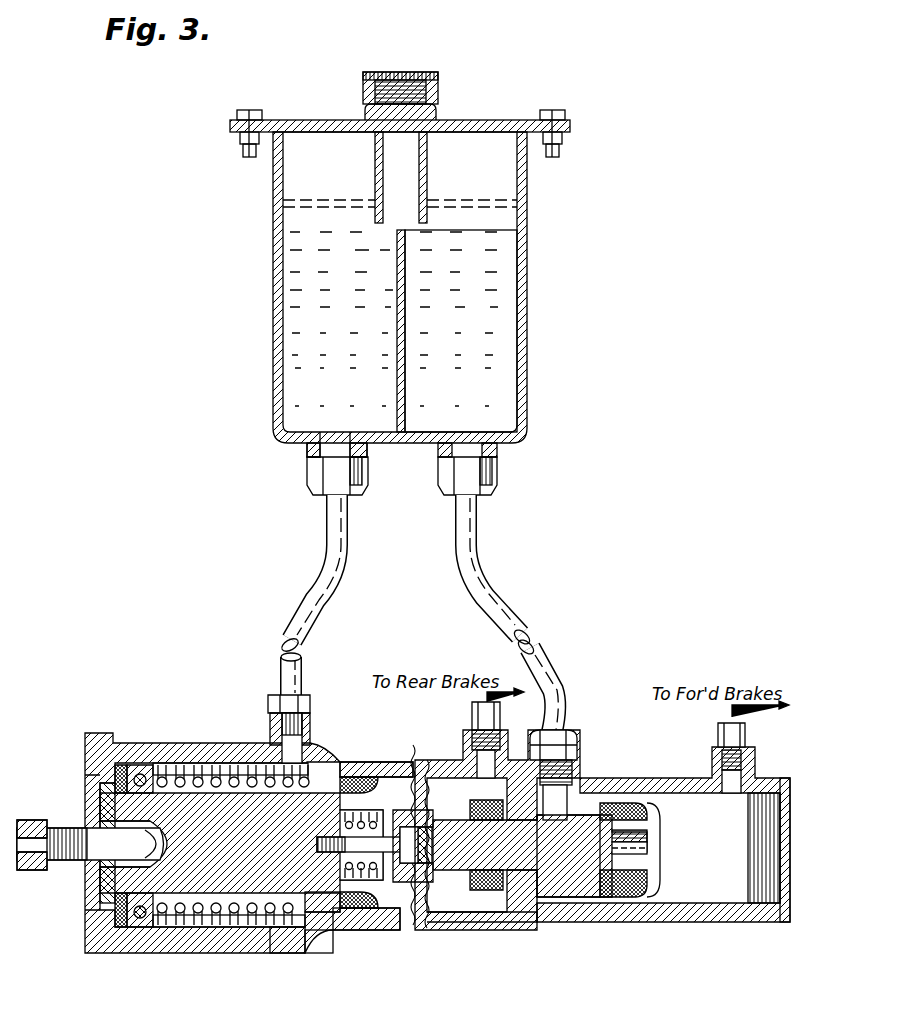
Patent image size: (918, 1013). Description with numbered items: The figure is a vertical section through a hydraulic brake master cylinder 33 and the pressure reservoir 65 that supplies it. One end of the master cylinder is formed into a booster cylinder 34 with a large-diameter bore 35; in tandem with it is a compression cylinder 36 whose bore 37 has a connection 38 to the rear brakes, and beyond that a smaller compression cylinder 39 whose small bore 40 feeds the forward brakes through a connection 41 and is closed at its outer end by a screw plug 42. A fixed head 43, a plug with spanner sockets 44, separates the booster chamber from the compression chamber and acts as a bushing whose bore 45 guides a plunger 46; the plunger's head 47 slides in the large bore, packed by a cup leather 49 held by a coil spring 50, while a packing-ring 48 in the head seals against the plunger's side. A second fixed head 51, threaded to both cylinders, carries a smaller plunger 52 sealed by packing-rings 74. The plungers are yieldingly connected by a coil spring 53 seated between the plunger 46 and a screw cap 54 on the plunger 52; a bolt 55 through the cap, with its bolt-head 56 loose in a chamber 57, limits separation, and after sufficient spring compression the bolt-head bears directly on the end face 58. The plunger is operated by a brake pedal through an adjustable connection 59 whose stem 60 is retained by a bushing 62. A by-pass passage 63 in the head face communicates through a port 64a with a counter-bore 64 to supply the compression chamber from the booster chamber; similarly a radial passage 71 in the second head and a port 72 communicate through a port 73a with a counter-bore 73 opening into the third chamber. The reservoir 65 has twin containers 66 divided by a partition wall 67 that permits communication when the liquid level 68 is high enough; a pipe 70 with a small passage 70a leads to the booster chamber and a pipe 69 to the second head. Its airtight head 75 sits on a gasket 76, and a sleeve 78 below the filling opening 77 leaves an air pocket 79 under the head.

The master cylinder 33 is at (354, 948).
The booster cylinder 34 is at (222, 930).
The booster chamber or bore 35 is at (232, 775).
The compression cylinder 36 is at (460, 928).
The compression chamber or bore 37 is at (497, 830).
The connection 38 is at (477, 718).
The smaller compression cylinder 39 is at (690, 922).
The chamber or bore 40 is at (697, 848).
The connection 41 is at (745, 742).
The screw plug 42 is at (783, 922).
The fixed head 43 is at (320, 952).
The sockets 44 is at (293, 945).
The bore 45 is at (365, 915).
The plunger 46 is at (241, 843).
The head 47 is at (118, 763).
The packing-ring 48 is at (362, 810).
The cup leather 49 is at (143, 768).
The coil spring 50 is at (262, 775).
The fixed head 51 is at (560, 925).
The plunger 52 is at (645, 890).
The coil spring 53 is at (400, 812).
The screw cap 54 is at (405, 885).
The bolt 55 is at (367, 845).
The bolt-head 56 is at (458, 815).
The chamber 57 is at (425, 845).
The end face 58 is at (462, 876).
The adjustable connection 59 is at (33, 820).
The stem 60 is at (63, 828).
The bushing 62 is at (98, 885).
The by-pass port or passage 63 is at (325, 768).
The counter-bore 64 is at (375, 910).
The port 64a is at (350, 785).
The pressure reservoir 65 is at (527, 330).
The twin containers 66 is at (512, 382).
The partition wall 67 is at (405, 285).
The level 68 is at (488, 200).
The pipe 69 is at (520, 590).
The pipe 70 is at (322, 590).
The passage 70a is at (315, 718).
The radial passage 71 is at (573, 790).
The port 72 is at (650, 850).
The counter-bore 73 is at (650, 838).
The port 73a is at (615, 815).
The packing-rings 74 is at (510, 913).
The airtight head 75 is at (498, 120).
The gasket 76 is at (566, 134).
The filling or inlet opening 77 is at (430, 110).
The sleeve 78 is at (428, 172).
The air pocket or chamber 79 is at (329, 166).